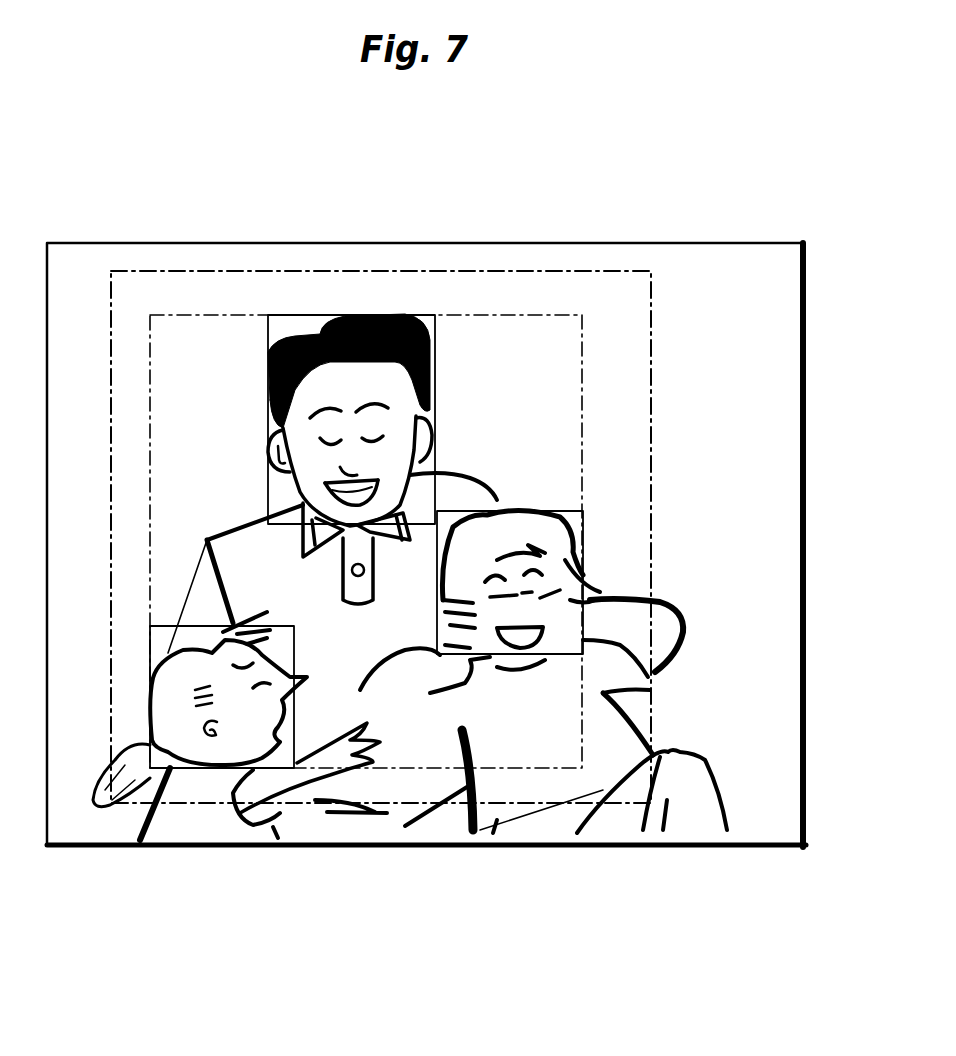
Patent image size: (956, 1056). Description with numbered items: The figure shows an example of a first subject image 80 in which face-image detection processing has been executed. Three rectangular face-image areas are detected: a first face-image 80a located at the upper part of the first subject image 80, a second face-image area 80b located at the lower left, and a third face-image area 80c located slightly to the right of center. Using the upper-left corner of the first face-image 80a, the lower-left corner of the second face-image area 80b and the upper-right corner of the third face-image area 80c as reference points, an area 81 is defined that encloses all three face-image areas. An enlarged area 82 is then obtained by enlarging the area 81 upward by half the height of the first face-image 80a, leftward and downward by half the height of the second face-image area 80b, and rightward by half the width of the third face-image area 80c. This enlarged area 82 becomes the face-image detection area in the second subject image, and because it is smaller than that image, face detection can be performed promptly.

The first subject image 80 is at (617, 243).
The area enclosing face-image areas 81 is at (527, 316).
The enlarged area 82 is at (651, 352).
The first face-image 80a is at (436, 400).
The second face-image area 80b is at (294, 650).
The third face-image area 80c is at (584, 556).